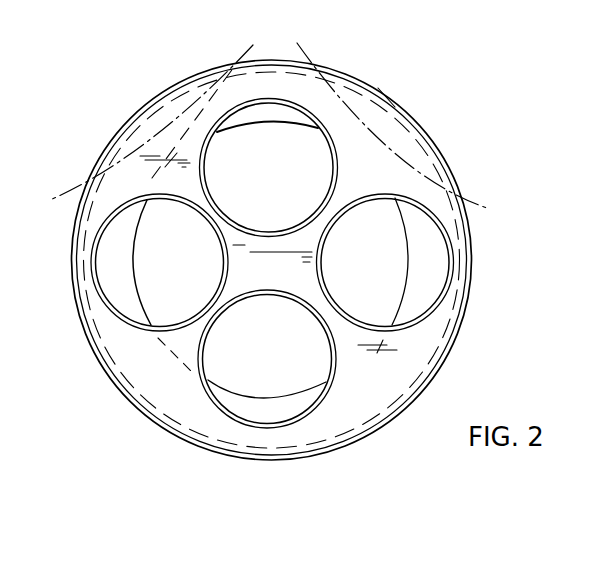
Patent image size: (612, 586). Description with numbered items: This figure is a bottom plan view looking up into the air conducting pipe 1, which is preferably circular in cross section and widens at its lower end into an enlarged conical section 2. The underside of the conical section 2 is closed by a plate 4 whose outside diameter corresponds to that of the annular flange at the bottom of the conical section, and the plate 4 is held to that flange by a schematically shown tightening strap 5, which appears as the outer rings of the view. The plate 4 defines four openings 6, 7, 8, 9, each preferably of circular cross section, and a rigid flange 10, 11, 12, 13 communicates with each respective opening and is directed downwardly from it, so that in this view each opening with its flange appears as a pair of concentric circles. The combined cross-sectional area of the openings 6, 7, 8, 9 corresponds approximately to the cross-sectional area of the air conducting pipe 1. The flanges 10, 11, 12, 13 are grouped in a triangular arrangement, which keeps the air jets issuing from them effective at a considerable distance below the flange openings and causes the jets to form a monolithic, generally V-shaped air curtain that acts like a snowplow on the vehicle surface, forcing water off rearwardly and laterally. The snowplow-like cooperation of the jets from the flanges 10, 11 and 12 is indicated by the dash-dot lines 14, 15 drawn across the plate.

The air conducting pipe 1 is at (133, 285).
The enlarged conical section 2 is at (103, 258).
The plate 4 is at (281, 282).
The tightening strap 5 is at (423, 132).
The opening 6 is at (293, 144).
The opening 7 is at (138, 262).
The opening 8 is at (408, 262).
The opening 9 is at (293, 359).
The rigid flange 10 is at (308, 112).
The rigid flange 11 is at (103, 227).
The rigid flange 12 is at (442, 298).
The rigid flange 13 is at (333, 360).
The dash dot line 14 is at (297, 43).
The dash dot line 15 is at (247, 60).